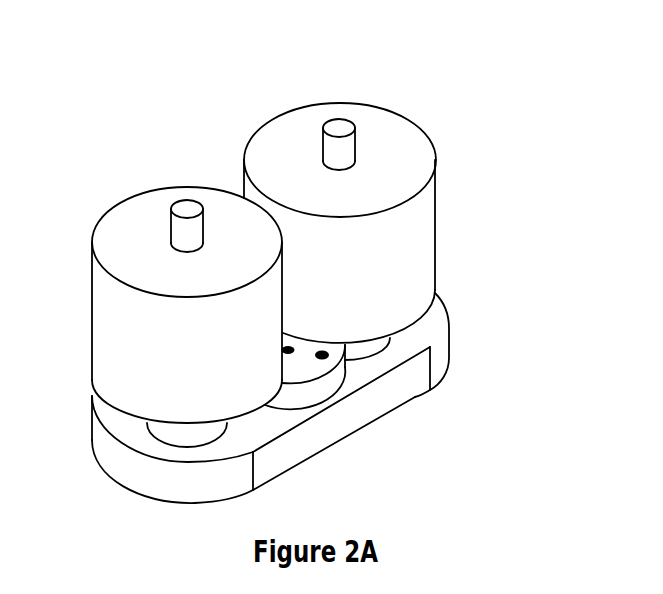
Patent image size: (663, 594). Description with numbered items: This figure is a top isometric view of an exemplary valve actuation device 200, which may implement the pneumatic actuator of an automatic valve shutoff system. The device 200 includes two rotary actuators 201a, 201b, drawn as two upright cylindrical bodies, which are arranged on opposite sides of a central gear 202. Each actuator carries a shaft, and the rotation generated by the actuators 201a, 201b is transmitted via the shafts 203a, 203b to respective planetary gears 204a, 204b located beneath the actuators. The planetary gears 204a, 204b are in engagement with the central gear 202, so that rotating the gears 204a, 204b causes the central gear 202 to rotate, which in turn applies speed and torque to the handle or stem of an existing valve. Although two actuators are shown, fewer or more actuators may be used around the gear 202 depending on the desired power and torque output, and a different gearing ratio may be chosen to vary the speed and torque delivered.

The device 200 is at (545, 35).
The rotary actuator 201a is at (110, 210).
The rotary actuator 201b is at (430, 142).
The central gear 202 is at (325, 387).
The shaft 203a is at (188, 204).
The shaft 203b is at (338, 128).
The planetary gear 204a is at (177, 439).
The planetary gear 204b is at (365, 352).